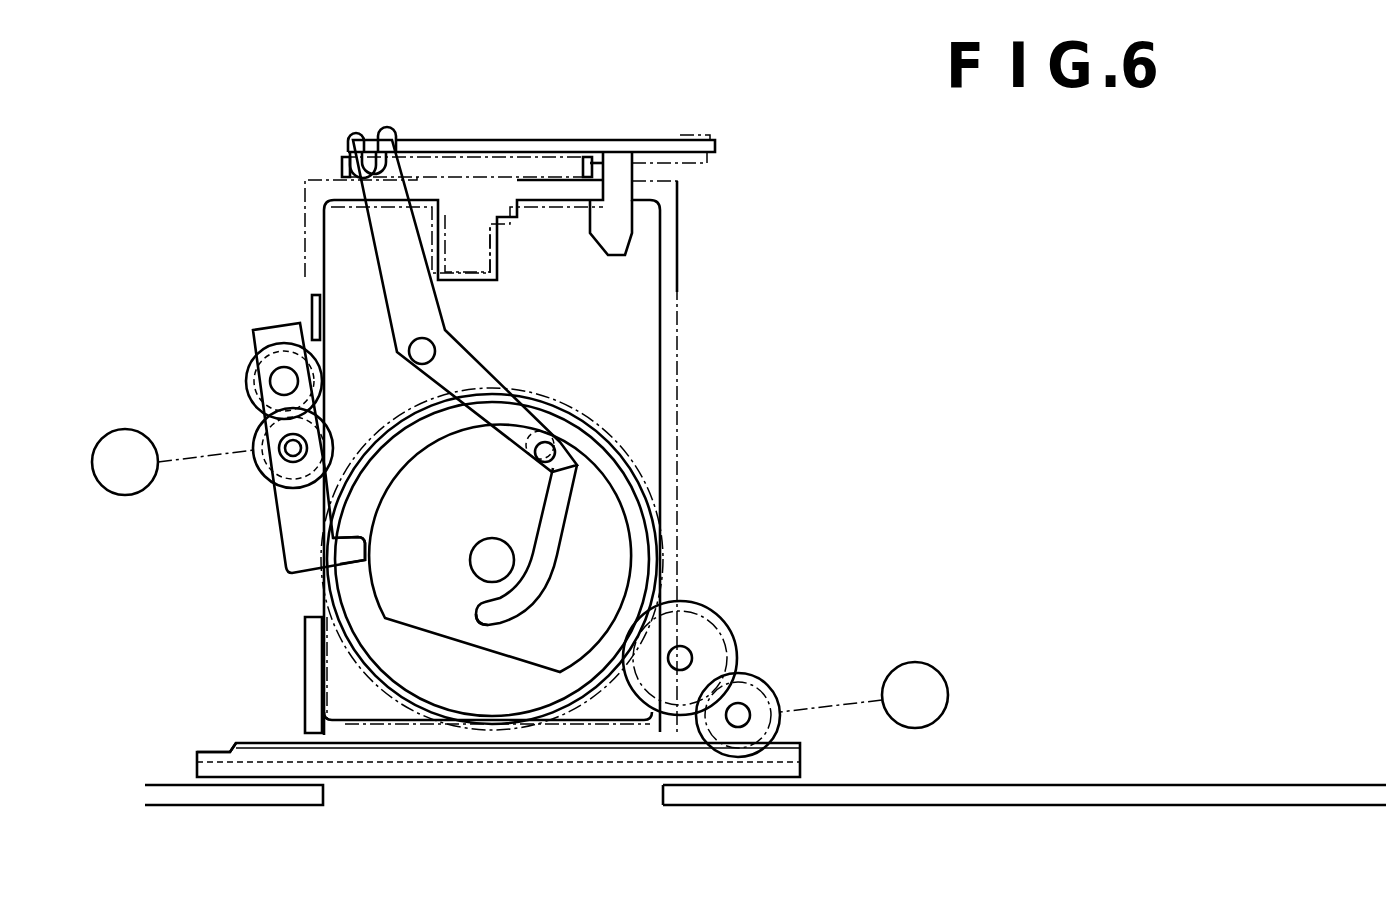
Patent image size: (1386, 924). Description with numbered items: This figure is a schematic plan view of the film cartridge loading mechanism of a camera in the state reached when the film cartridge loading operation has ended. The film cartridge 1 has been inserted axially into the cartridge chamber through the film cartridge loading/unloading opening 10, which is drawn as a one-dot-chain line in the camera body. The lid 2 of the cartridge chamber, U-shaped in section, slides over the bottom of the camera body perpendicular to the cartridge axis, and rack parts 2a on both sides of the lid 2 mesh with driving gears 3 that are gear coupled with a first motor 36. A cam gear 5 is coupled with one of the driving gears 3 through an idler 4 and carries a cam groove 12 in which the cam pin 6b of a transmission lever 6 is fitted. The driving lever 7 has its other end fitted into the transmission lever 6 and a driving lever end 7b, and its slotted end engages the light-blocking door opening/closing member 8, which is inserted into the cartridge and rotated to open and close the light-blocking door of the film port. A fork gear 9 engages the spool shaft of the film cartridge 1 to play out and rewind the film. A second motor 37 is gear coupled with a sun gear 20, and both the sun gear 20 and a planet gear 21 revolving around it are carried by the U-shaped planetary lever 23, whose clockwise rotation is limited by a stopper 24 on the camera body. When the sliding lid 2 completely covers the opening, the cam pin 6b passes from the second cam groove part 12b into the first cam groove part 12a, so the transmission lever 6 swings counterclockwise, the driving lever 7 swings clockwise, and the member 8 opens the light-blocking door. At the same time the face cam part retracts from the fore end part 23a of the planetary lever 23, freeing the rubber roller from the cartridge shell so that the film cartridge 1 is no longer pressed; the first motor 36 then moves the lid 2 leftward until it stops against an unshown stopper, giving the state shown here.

The film cartridge 1 is at (632, 278).
The lid 2 is at (803, 745).
The rack parts 2a is at (268, 743).
The driving gears 3 is at (740, 706).
The idler 4 is at (713, 636).
The cam gear 5 is at (622, 456).
The transmission lever 6 is at (420, 310).
The cam pin 6b is at (548, 440).
The driving lever 7 is at (546, 143).
The driving lever end 7b is at (372, 138).
The light-blocking door opening/closing member 8 is at (617, 225).
The fork gear 9 is at (467, 250).
The film cartridge loading/unloading opening 10 is at (325, 790).
The cam groove 12 is at (560, 525).
The first cam groove part 12a is at (575, 472).
The second cam groove part 12b is at (512, 615).
The sun gear 20 is at (260, 462).
The planet gear 21 is at (248, 378).
The planetary lever 23 is at (293, 530).
The fore end part 23a is at (340, 556).
The stopper 24 is at (310, 300).
The first motor 36 is at (942, 665).
The second motor 37 is at (118, 430).